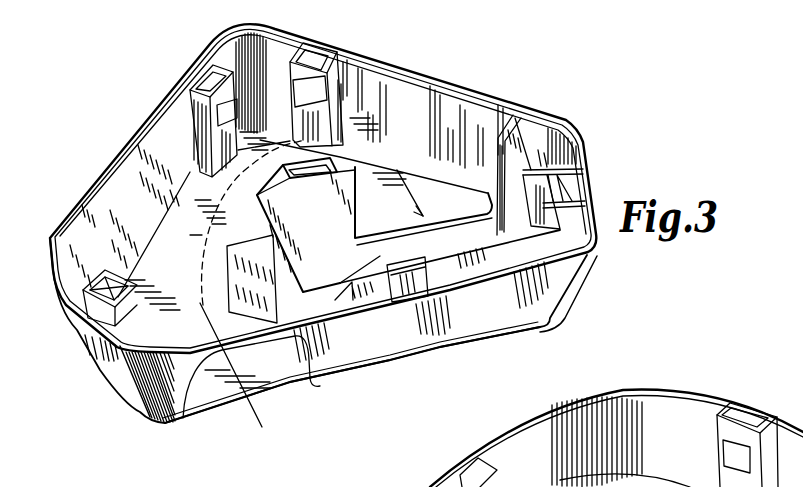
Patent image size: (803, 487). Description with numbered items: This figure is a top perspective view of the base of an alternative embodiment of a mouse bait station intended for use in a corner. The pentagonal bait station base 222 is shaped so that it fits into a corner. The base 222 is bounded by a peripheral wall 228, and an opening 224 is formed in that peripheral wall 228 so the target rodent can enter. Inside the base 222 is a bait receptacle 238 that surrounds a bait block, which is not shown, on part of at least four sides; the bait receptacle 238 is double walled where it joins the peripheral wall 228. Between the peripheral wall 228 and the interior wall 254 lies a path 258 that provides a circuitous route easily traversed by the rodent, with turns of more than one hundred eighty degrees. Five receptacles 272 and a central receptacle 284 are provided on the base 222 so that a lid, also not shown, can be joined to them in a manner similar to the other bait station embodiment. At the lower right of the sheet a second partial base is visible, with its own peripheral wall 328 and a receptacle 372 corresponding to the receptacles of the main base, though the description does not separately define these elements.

The bait station base 222 is at (608, 98).
The opening 224 is at (208, 318).
The peripheral wall 228 is at (510, 103).
The bait receptacle 238 is at (333, 258).
The interior wall 254 is at (217, 198).
The path 258 is at (258, 410).
The receptacles 272 is at (198, 70).
The central receptacle 284 is at (343, 157).
The side wall (second housing) 328 is at (550, 478).
The standoff post (second housing) 372 is at (460, 463).